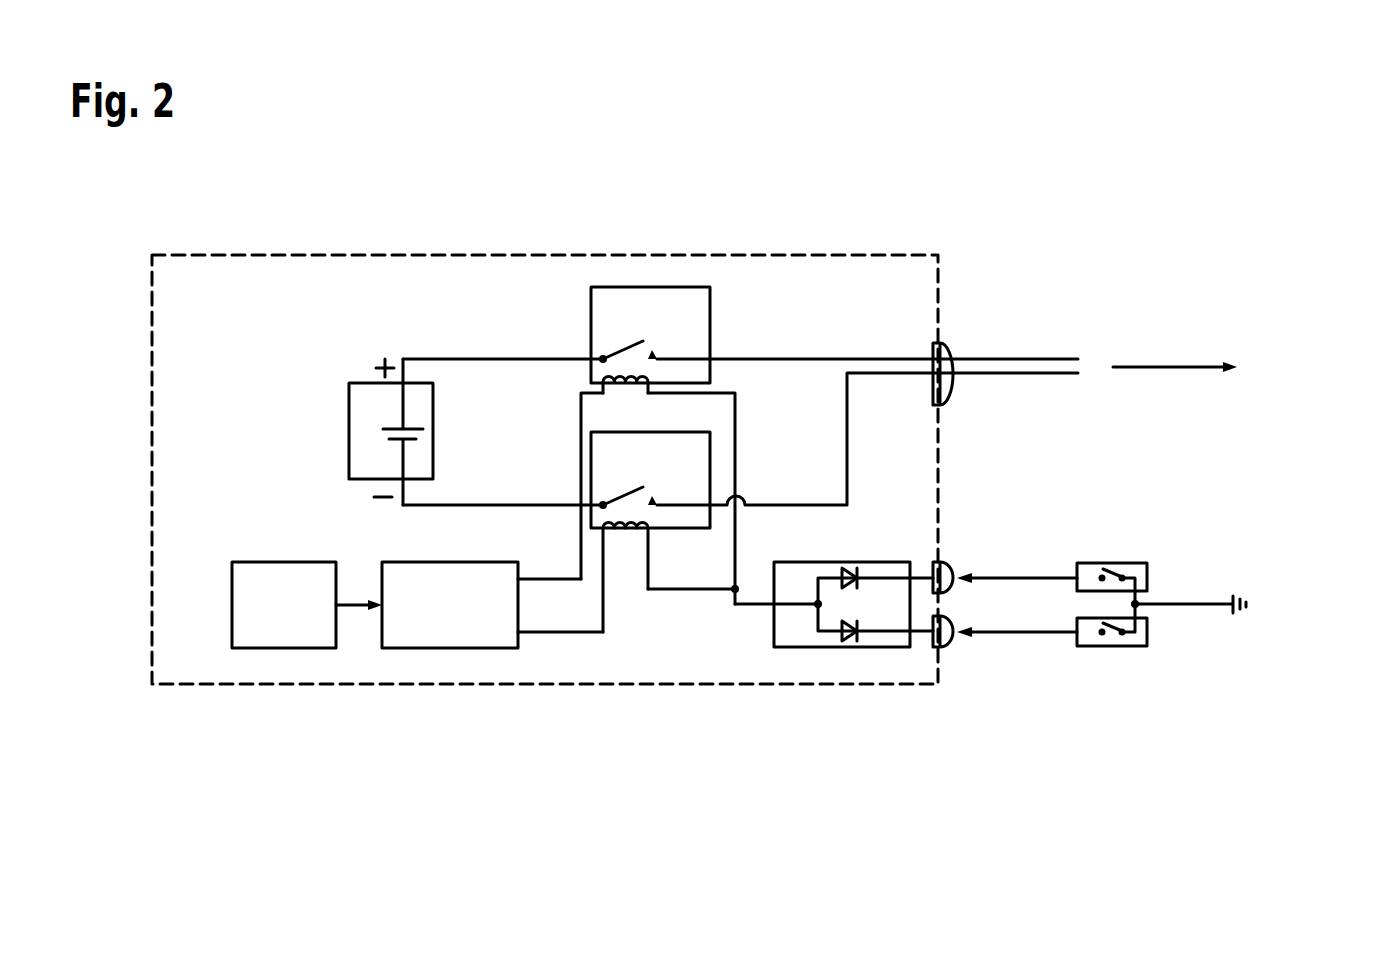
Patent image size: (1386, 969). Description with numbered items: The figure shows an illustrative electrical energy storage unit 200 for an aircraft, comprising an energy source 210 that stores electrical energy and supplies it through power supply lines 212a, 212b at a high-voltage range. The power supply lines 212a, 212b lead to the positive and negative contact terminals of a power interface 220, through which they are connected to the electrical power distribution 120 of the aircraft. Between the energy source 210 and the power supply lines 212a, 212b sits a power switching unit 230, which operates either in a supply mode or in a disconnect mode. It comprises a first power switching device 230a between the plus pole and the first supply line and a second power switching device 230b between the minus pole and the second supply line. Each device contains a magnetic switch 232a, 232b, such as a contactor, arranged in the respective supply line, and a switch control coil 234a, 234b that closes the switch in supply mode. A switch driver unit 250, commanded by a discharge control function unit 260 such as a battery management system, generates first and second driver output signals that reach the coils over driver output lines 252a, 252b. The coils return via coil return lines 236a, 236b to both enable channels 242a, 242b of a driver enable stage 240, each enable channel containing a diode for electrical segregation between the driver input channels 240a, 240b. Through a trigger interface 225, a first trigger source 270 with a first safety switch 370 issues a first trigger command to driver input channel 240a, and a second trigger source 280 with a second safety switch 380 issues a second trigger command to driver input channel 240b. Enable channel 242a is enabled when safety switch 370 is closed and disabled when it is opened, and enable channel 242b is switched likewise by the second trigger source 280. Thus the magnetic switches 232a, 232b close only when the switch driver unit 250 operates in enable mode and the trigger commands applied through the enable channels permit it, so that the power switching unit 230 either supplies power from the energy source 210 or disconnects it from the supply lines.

The electrical energy storage unit 200 is at (262, 215).
The energy source 210 is at (363, 383).
The power supply line 212a is at (856, 358).
The power supply line 212b is at (848, 462).
The power interface 220 is at (955, 340).
The electrical power distribution 120 is at (1241, 367).
The trigger interface 225 is at (960, 559).
The power switching unit 230 is at (659, 457).
The first power switching device 230a is at (638, 280).
The second power switching device 230b is at (659, 589).
The magnetic switch 232a is at (623, 350).
The magnetic switch 232b is at (621, 486).
The switch control coil 234a is at (600, 366).
The switch control coil 234b is at (600, 512).
The coil return line 236a is at (737, 437).
The coil return line 236b is at (713, 590).
The driver enable stage 240 is at (905, 604).
The driver input channel 240a is at (926, 576).
The driver input channel 240b is at (931, 617).
The first enable channel 242a is at (849, 570).
The second enable channel 242b is at (855, 647).
The switch driver unit 250 is at (452, 648).
The driver output line 252a is at (580, 541).
The driver output line 252b is at (585, 632).
The discharge control function unit 260 is at (283, 648).
The trigger source 270 is at (1178, 543).
The trigger source 280 is at (1178, 666).
The first safety switch 370 is at (1119, 559).
The second safety switch 380 is at (1117, 648).